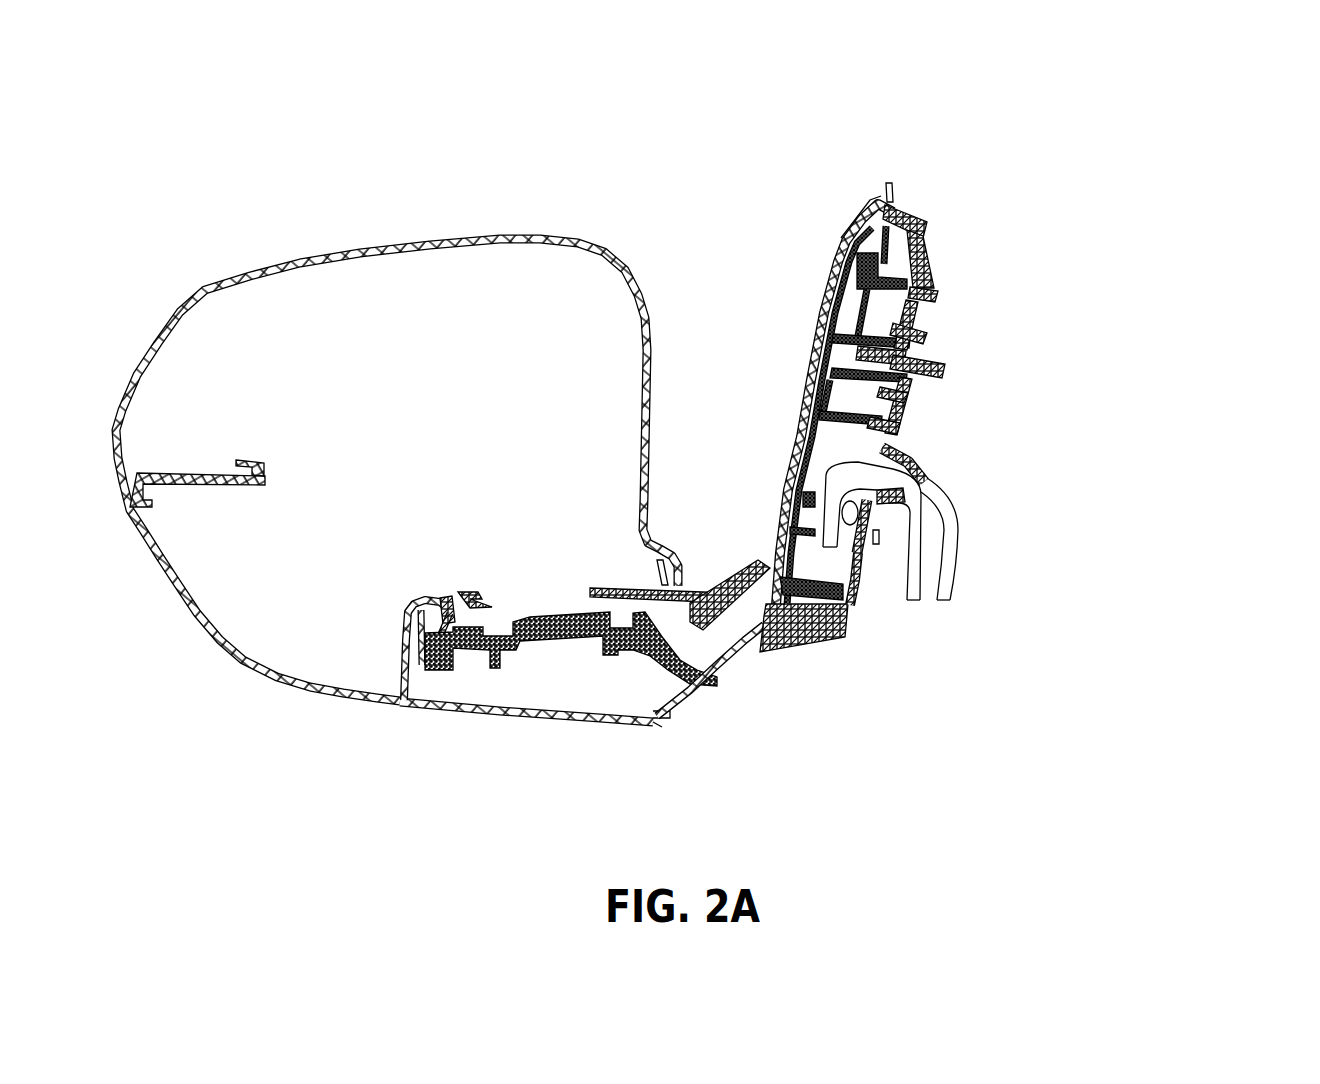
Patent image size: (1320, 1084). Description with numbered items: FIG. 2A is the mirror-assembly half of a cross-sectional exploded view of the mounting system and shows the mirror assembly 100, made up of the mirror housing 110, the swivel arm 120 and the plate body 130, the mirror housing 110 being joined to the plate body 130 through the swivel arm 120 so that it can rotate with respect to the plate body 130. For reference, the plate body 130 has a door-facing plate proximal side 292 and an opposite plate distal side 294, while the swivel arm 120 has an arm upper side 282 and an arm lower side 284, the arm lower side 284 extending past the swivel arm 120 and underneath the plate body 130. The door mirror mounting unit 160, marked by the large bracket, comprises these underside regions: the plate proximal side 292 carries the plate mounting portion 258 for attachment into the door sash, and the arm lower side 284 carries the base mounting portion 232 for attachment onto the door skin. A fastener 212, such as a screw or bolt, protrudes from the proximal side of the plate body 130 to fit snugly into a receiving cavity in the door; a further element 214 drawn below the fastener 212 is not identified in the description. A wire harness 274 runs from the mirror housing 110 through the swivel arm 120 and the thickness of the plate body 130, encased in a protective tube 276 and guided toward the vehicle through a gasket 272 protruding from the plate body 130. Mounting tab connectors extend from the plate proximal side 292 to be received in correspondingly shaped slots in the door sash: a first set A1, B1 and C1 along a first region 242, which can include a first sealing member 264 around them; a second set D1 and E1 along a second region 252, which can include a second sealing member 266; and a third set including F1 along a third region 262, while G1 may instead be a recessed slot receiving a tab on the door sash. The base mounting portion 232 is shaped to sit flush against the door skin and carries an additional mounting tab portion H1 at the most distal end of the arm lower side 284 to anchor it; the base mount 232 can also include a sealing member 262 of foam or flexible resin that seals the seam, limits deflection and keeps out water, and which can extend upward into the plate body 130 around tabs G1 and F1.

The mirror assembly 100 is at (300, 156).
The mirror housing 110 is at (384, 237).
The swivel arm 120 is at (523, 718).
The plate body 130 is at (798, 206).
The first region 242 is at (848, 201).
The plate distal side 294 is at (766, 303).
The second region 252 is at (827, 395).
The second sealing member 266 is at (838, 434).
The wire harness 274 is at (848, 481).
The arm upper side 282 is at (714, 575).
The plate proximal side 292 is at (1042, 250).
The first sealing member 264 is at (908, 275).
The fastener 212 is at (952, 372).
The second rib 214 is at (920, 452).
The gasket 272 is at (944, 480).
The tube 276 is at (968, 498).
The sealing member 262 is at (1068, 480).
The plate mounting portion 258 is at (1143, 172).
The door mirror mounting unit 160 is at (1216, 172).
The base mounting portion 232 is at (853, 662).
The arm lower side 284 is at (840, 704).
The mounting tab connector A1 is at (932, 228).
The mounting tab connector B1 is at (950, 297).
The mounting tab connector C1 is at (937, 340).
The mounting tab connector D1 is at (927, 391).
The mounting tab connector E1 is at (914, 428).
The mounting tab connector F1 is at (887, 550).
The mounting tab connector G1 is at (864, 610).
The mounting tab portion H1 is at (660, 740).